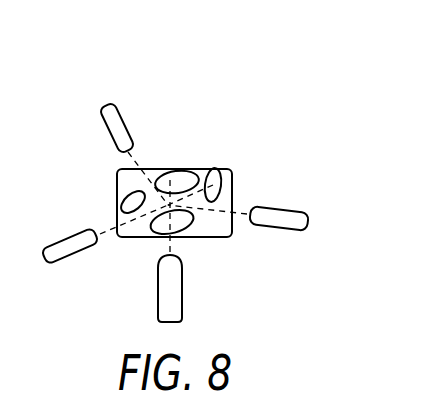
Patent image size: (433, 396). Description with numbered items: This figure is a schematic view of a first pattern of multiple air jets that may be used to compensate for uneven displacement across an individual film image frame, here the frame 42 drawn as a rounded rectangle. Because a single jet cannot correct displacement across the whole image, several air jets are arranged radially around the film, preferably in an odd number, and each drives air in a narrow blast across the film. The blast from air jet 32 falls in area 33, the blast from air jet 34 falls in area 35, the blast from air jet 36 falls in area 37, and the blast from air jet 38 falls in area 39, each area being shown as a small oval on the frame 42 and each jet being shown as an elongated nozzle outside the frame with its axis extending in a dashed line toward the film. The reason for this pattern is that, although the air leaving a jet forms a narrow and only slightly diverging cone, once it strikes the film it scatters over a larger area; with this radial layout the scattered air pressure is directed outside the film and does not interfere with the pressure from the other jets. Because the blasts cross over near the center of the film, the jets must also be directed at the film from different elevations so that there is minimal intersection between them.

The air jet 32 is at (183, 288).
The area 33 is at (186, 168).
The air jet 34 is at (66, 255).
The area 35 is at (227, 178).
The air jet 36 is at (288, 208).
The area 37 is at (120, 201).
The air jet 38 is at (121, 115).
The area 39 is at (158, 236).
The frame 42 is at (225, 165).